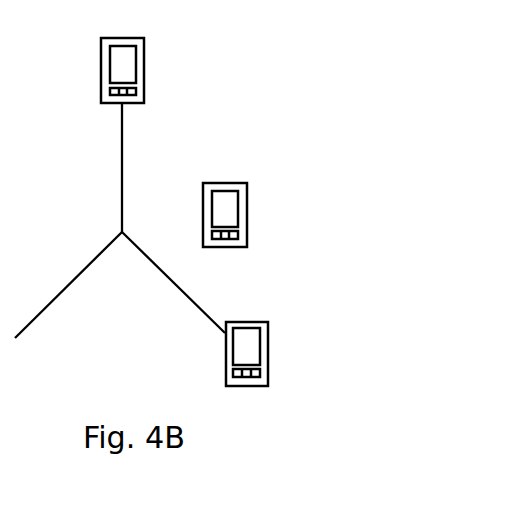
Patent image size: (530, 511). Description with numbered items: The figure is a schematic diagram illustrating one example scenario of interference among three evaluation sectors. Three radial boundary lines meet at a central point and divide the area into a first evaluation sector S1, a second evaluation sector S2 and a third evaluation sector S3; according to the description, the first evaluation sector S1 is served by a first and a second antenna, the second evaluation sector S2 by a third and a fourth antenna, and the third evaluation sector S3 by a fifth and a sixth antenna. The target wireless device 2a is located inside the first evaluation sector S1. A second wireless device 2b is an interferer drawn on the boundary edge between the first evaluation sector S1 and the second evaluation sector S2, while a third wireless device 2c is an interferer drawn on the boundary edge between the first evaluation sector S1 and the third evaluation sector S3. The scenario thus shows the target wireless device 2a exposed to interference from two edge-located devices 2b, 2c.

The target wireless device 2a is at (247, 203).
The second wireless device 2b is at (268, 354).
The third wireless device 2c is at (144, 67).
The first evaluation sector S1 is at (228, 150).
The second evaluation sector S2 is at (137, 346).
The third evaluation sector S3 is at (42, 150).